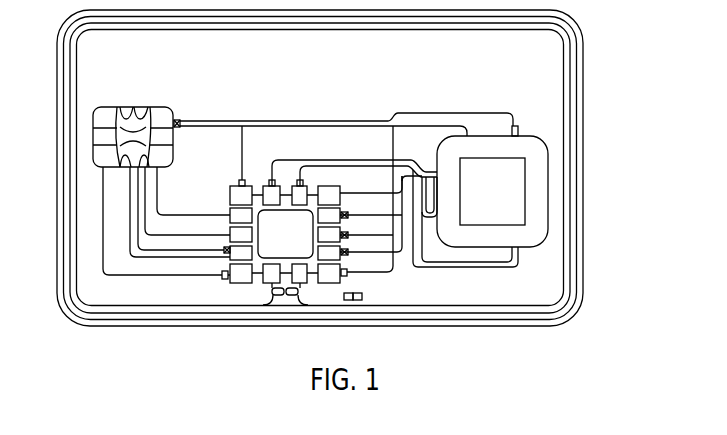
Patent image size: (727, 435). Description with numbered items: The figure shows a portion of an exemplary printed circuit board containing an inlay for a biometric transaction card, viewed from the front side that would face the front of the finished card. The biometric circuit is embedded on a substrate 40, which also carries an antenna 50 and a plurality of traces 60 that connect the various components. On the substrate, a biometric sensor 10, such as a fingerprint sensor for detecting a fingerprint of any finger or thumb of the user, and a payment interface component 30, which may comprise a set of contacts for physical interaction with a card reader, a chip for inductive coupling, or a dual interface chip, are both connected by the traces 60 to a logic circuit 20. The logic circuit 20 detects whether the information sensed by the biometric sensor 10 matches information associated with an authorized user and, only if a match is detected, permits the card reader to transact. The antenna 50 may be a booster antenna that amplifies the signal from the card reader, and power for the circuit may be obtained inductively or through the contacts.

The biometric sensor 10 is at (501, 209).
The logic circuit 20 is at (296, 250).
The payment interface component 30 is at (164, 114).
The substrate 40 is at (513, 77).
The antenna 50 is at (571, 119).
The traces 60 is at (292, 119).